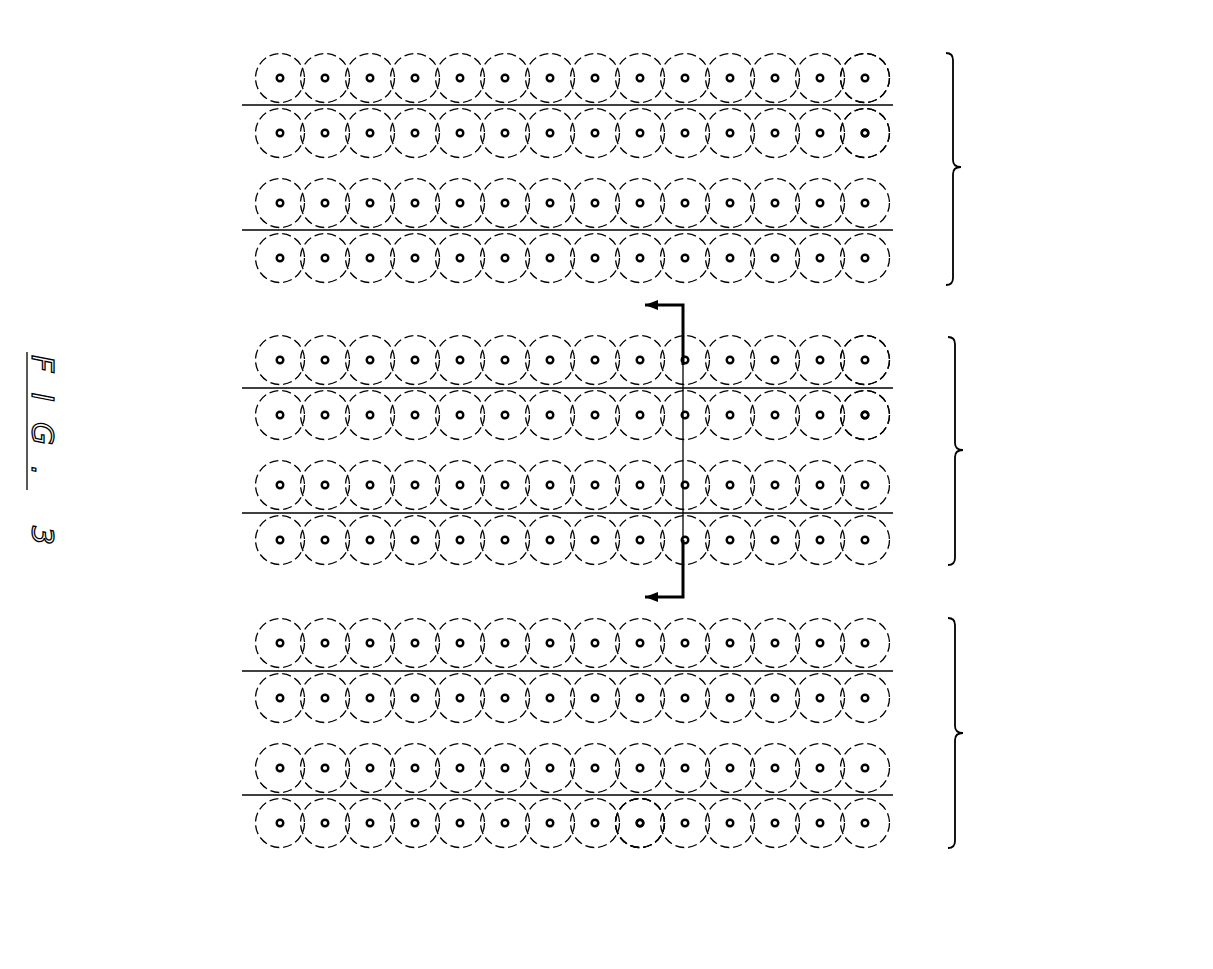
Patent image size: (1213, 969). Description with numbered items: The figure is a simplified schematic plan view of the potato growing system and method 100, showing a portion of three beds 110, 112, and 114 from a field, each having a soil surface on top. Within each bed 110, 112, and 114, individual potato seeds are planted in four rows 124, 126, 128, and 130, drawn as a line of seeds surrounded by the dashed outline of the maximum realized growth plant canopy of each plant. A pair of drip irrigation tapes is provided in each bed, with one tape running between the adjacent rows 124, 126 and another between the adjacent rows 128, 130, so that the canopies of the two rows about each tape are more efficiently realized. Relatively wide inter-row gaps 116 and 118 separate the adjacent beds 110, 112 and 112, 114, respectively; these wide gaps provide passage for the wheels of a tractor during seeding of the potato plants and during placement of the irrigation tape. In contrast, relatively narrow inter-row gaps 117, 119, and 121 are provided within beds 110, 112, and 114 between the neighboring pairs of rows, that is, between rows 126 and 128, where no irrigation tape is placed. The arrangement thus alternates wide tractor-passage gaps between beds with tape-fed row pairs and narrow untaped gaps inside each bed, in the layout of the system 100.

The system and method for growing potato crops 100 is at (654, 452).
The bed 110 is at (555, 165).
The bed 112 is at (604, 444).
The bed 114 is at (603, 760).
The inter-row gap 116 is at (970, 315).
The inter-row gap 118 is at (970, 598).
The inter-row gap 117 is at (866, 168).
The inter-row gap 119 is at (868, 452).
The inter-row gap 121 is at (868, 734).
The row 124 is at (248, 77).
The row 126 is at (248, 134).
The row 128 is at (249, 203).
The row 130 is at (249, 258).